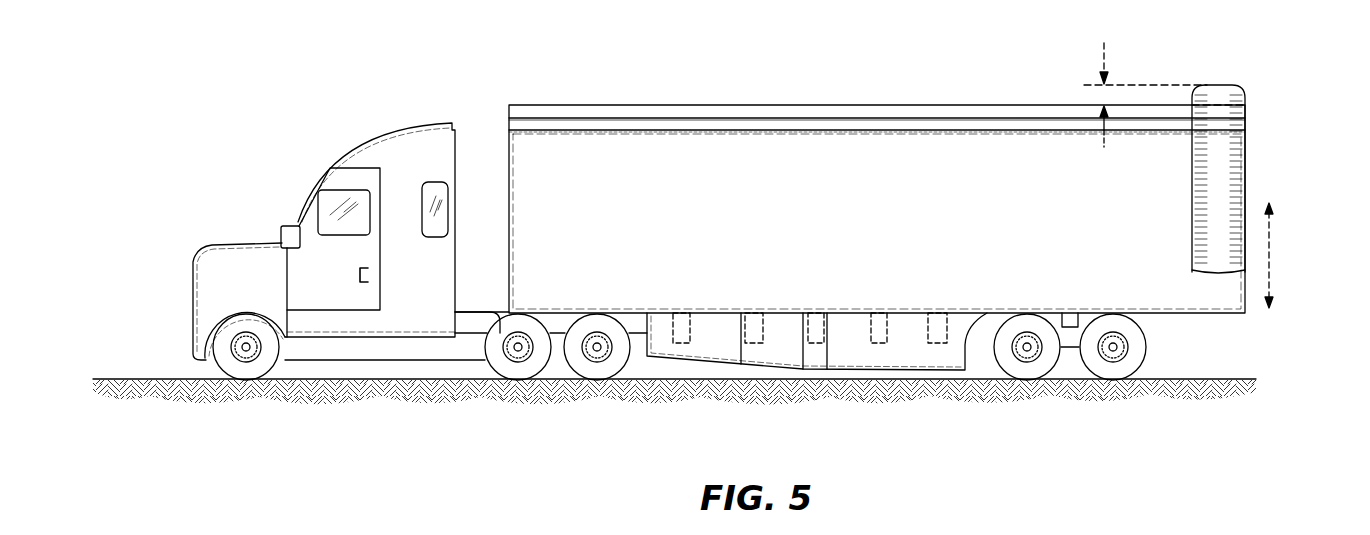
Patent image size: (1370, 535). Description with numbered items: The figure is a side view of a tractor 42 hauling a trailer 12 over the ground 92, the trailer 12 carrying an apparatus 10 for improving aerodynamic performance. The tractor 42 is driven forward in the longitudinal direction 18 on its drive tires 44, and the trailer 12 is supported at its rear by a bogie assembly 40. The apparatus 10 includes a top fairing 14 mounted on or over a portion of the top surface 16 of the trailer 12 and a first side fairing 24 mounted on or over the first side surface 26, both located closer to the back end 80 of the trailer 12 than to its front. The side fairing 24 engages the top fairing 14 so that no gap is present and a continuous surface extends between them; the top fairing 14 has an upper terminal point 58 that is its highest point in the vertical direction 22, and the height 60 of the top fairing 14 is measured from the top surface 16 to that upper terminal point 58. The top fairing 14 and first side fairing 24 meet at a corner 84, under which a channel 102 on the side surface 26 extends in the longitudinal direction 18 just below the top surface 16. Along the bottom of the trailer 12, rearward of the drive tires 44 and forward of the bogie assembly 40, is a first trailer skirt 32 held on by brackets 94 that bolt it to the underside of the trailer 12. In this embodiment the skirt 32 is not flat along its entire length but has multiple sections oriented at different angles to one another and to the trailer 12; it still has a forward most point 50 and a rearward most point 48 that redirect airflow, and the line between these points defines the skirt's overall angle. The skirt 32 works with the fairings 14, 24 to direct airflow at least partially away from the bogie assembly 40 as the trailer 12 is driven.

The apparatus 10 is at (1240, 57).
The trailer 12 is at (509, 104).
The top fairing 14 is at (1229, 86).
The top surface 16 is at (590, 100).
The longitudinal direction 18 is at (363, 80).
The vertical direction 22 is at (1272, 255).
The first side fairing 24 is at (1241, 160).
The first side surface 26 is at (662, 145).
The first trailer skirt 32 is at (863, 356).
The bogie assembly 40 is at (1070, 348).
The tractor 42 is at (387, 133).
The drive tires 44 is at (587, 366).
The rearward most point 48 is at (965, 344).
The forward most point 50 is at (645, 330).
The upper terminal point 58 is at (1214, 85).
The height 60 is at (1101, 132).
The back end 80 is at (1258, 197).
The corner 84 is at (1246, 105).
The ground 92 is at (161, 378).
The brackets 94 is at (762, 330).
The channel 102 is at (740, 115).